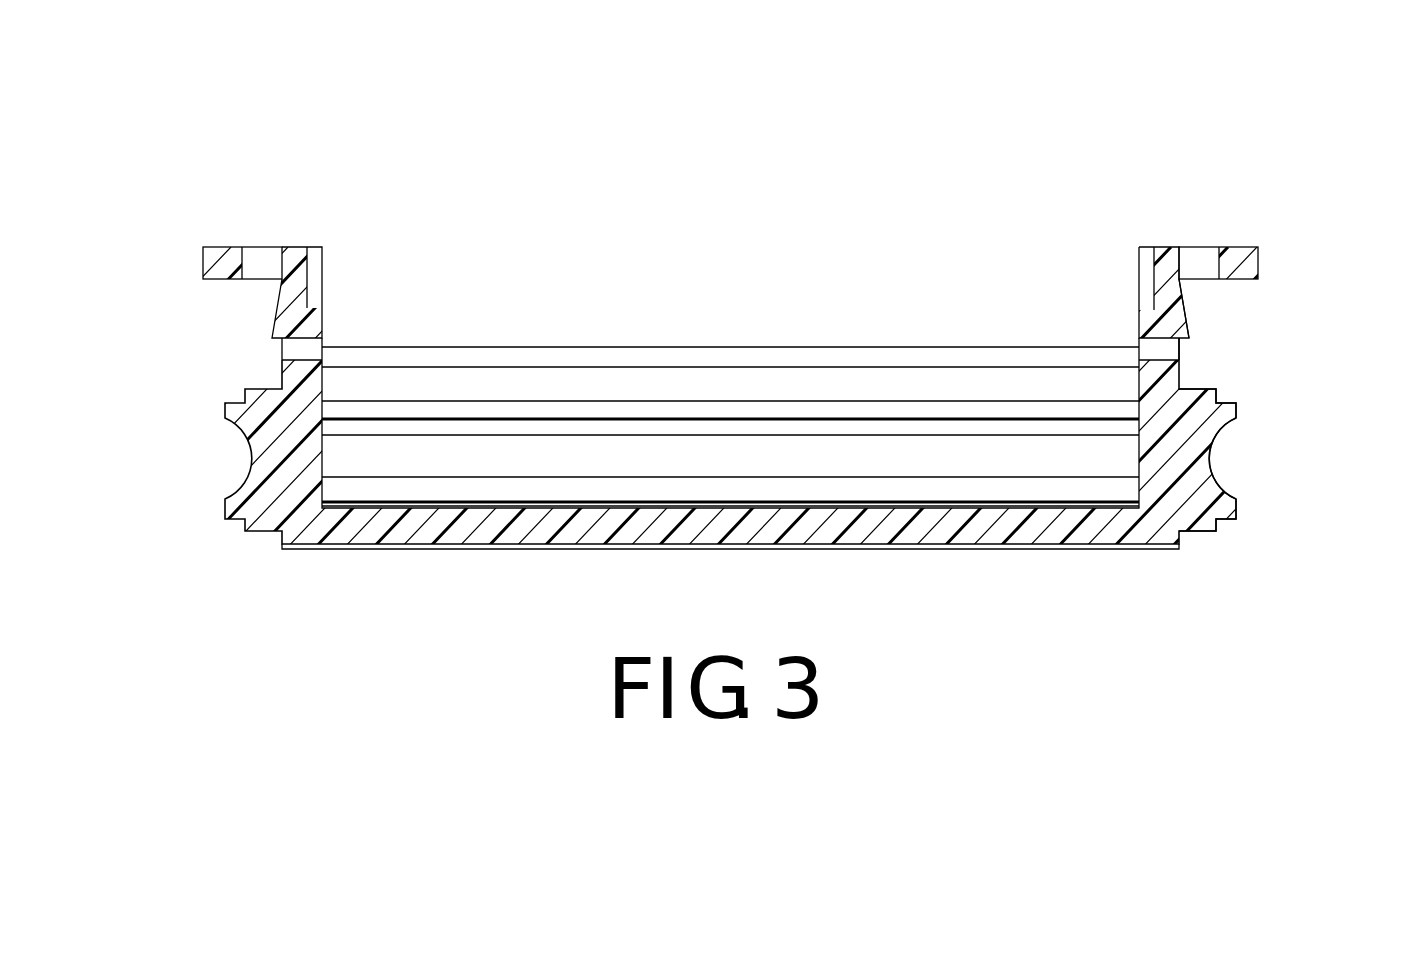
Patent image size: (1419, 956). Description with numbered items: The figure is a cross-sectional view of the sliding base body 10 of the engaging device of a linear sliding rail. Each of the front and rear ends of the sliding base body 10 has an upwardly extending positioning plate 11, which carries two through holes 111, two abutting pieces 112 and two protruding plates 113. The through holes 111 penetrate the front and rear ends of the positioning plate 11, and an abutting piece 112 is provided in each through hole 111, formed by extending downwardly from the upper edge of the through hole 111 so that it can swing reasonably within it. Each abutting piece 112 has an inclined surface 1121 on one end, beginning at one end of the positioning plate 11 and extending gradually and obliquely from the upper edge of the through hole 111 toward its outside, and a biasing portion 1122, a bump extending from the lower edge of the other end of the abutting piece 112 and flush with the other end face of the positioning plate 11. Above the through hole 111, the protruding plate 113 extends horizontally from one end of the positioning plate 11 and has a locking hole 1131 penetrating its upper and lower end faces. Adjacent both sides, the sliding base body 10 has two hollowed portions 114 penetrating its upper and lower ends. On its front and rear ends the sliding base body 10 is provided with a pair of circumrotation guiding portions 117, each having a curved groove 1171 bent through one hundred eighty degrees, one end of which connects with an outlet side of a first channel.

The sliding base body 10 is at (183, 208).
The positioning plate 11 is at (298, 377).
The through hole 111 is at (1165, 353).
The abutting piece 112 is at (1168, 293).
The inclined surface 1121 is at (1182, 313).
The biasing portion 1122 is at (1140, 330).
The protruding plate 113 is at (1252, 263).
The locking hole 1131 is at (1202, 262).
The hollowed portion 114 is at (648, 450).
The circumrotation guiding portion 117 is at (1212, 417).
The curved groove 1171 is at (1213, 450).